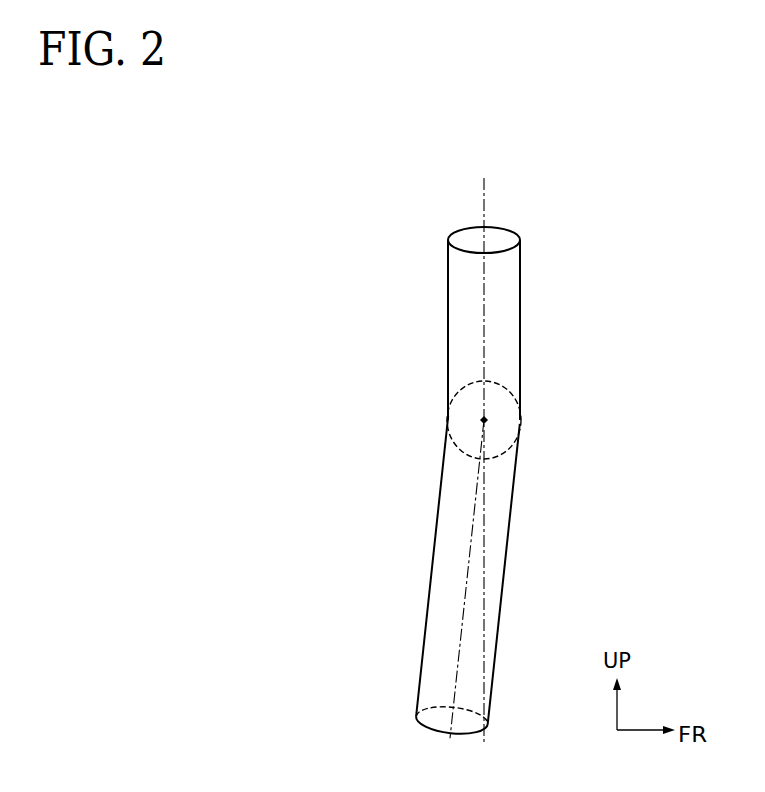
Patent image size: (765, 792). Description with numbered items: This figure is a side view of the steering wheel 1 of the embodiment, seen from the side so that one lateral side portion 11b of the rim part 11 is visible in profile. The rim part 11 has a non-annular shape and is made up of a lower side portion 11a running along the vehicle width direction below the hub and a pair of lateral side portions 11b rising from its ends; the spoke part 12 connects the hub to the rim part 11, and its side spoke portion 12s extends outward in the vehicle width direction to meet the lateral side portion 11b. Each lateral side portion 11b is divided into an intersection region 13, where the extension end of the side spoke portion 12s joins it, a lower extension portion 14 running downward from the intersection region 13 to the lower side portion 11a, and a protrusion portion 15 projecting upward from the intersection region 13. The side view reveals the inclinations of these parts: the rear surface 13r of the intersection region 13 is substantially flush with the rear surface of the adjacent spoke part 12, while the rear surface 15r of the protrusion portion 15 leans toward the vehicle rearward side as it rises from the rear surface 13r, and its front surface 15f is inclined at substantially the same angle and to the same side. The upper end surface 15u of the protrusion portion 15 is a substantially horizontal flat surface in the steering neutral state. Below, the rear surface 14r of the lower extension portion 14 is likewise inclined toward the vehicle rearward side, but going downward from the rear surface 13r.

The steering wheel 1 is at (583, 219).
The rim part 11 is at (522, 320).
The lower side portion 11a is at (470, 650).
The lateral side portion 11b is at (517, 456).
The spoke part 12 is at (484, 420).
The side spoke portion 12s is at (507, 384).
The intersection region 13 is at (508, 417).
The rear surface of intersection region 13r is at (448, 416).
The lower extension portion 14 is at (501, 500).
The rear surface of lower extension portion 14r is at (432, 568).
The protrusion portion 15 is at (512, 296).
The front surface of protrusion portion 15f is at (522, 268).
The rear surface of protrusion portion 15r is at (448, 282).
The upper end surface 15u is at (497, 237).